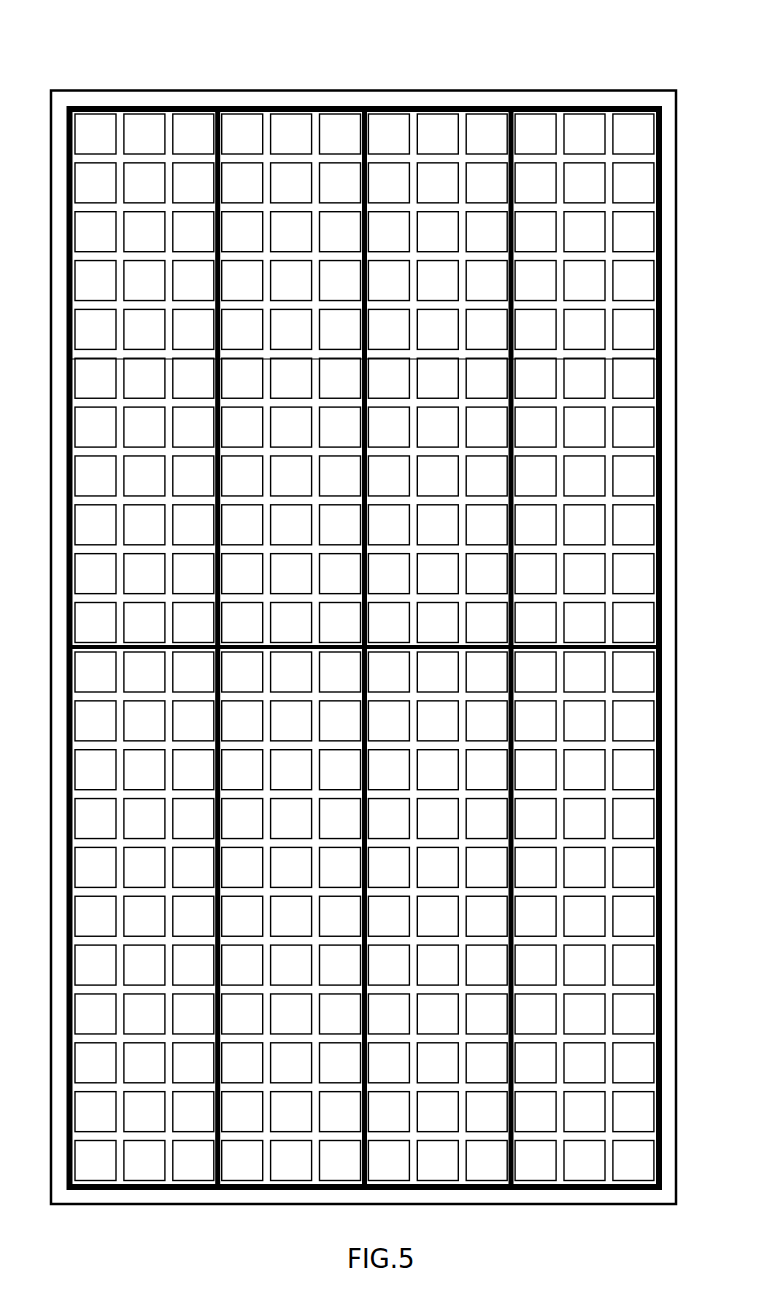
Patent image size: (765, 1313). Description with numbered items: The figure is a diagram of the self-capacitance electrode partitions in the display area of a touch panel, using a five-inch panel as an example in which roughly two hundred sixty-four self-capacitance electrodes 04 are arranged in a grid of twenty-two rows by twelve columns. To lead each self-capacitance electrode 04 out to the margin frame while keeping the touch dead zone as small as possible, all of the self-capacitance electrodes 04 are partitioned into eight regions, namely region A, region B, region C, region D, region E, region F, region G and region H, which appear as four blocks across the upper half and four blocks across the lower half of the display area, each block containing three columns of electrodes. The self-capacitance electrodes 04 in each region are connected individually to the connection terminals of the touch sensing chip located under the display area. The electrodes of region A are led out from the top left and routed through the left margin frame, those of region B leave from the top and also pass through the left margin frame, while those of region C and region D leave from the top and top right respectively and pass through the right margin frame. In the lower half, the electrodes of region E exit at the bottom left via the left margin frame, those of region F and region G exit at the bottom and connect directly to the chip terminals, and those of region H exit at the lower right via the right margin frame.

The self-capacitance electrode 04 is at (97, 112).
The Part A is at (144, 378).
The Part B is at (291, 378).
The Part C is at (437, 378).
The Part D is at (584, 378).
The Part E is at (144, 916).
The Part F is at (291, 916).
The Part G is at (437, 916).
The Part H is at (584, 916).